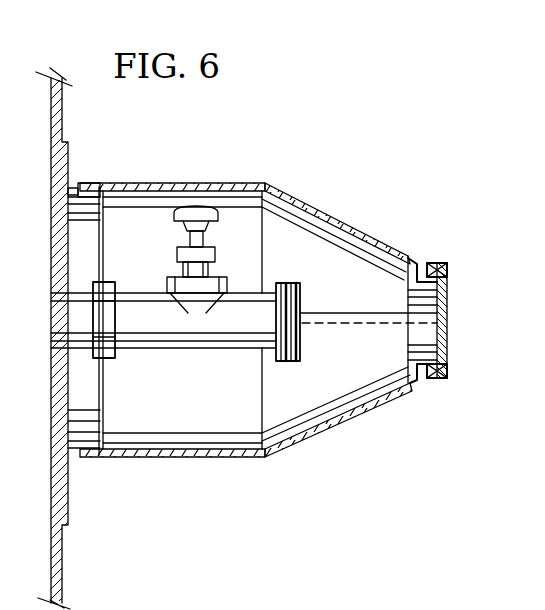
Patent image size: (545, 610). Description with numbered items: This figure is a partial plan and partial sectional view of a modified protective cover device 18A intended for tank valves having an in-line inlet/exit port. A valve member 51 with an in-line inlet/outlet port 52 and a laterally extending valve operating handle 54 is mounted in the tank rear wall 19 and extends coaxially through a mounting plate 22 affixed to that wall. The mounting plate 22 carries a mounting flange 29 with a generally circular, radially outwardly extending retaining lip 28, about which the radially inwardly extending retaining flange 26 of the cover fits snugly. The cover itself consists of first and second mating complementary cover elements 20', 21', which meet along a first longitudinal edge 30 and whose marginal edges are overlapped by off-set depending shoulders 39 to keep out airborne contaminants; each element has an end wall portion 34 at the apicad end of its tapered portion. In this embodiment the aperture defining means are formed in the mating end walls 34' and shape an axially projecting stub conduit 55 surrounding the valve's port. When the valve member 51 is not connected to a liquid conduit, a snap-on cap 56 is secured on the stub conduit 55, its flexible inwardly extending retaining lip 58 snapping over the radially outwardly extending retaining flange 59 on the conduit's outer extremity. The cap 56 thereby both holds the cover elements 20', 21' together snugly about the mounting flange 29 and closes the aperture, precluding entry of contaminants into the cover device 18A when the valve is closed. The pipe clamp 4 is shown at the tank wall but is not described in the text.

The rear wall 19 is at (58, 103).
The mounting plate 22 is at (73, 168).
The retaining flange 26 is at (82, 188).
The retaining lip 28 is at (70, 213).
The mounting flange 29 is at (106, 198).
The protective cover device 18A is at (218, 468).
The first cover element 20' is at (336, 215).
The second cover element 21' is at (337, 419).
The valve member 51 is at (238, 268).
The first longitudinal edge 30 is at (340, 313).
The pipe clamp 4 is at (57, 320).
The in-line inlet/outlet port 52 is at (278, 362).
The depending shoulders 39 is at (325, 328).
The valve operating handle 54 is at (178, 219).
The cap 56 is at (443, 265).
The end wall portion 34 is at (411, 237).
The retaining flange 59 is at (425, 293).
The stub conduit 55 is at (425, 348).
The mating end walls 34' is at (387, 377).
The retaining lip 58 is at (423, 374).